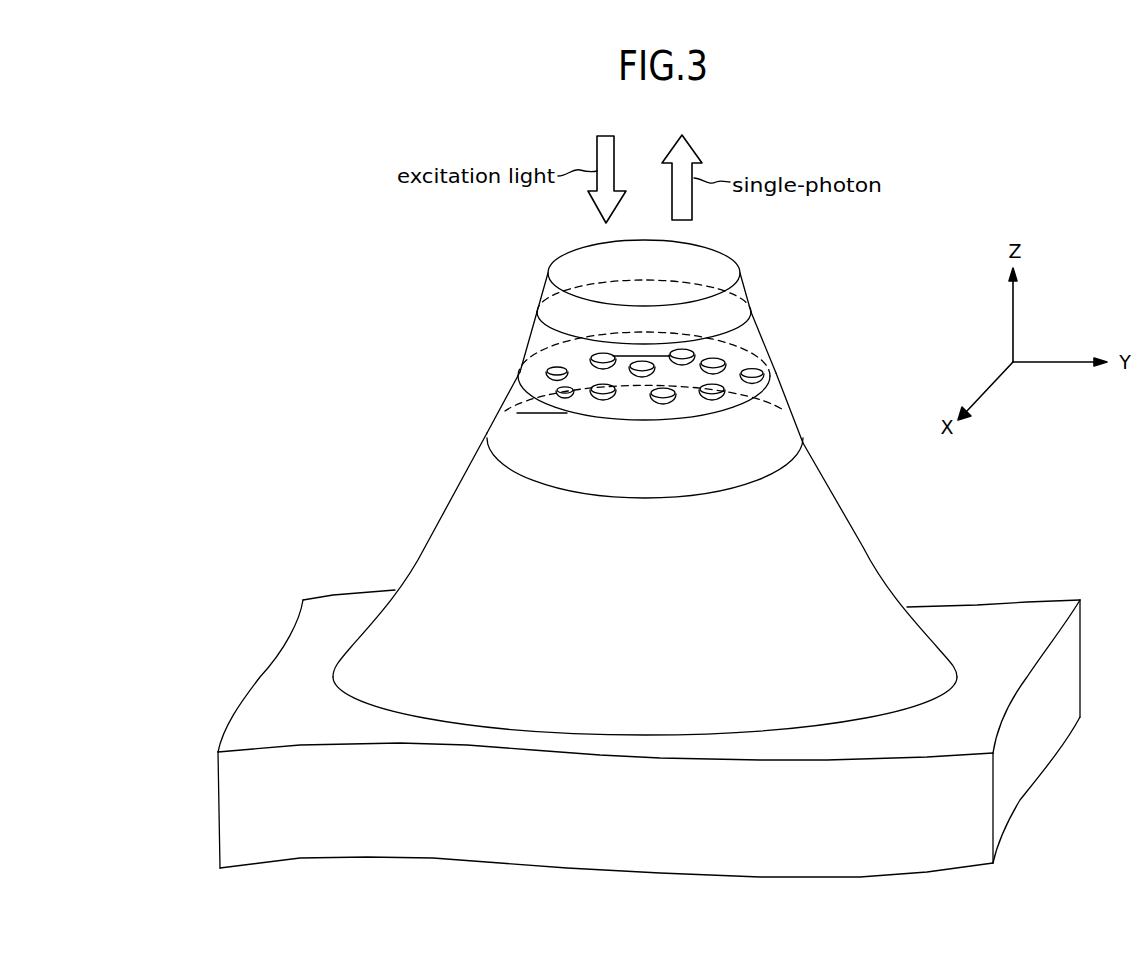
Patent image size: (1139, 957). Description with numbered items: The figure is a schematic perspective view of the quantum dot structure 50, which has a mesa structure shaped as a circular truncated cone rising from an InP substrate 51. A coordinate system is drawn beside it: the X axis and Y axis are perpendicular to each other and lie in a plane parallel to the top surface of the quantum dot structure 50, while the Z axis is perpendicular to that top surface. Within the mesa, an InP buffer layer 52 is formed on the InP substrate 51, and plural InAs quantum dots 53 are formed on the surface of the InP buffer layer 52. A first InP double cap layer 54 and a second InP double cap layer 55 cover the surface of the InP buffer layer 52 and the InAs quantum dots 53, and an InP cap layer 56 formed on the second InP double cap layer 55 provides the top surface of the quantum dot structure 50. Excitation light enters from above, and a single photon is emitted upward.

The quantum dot structure 50 is at (448, 326).
The InP substrate 51 is at (862, 546).
The InP buffer layer 52 is at (785, 396).
The InAs quantum dots 53 is at (525, 350).
The first InP double cap layer 54 is at (761, 337).
The second InP double cap layer 55 is at (685, 344).
The InP cap layer 56 is at (745, 288).